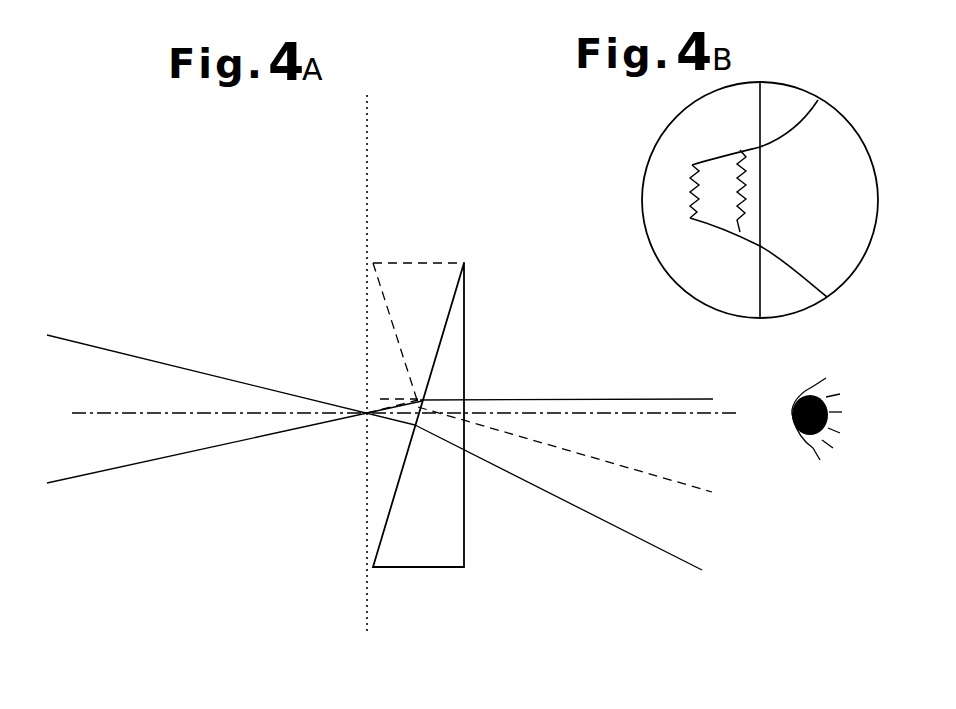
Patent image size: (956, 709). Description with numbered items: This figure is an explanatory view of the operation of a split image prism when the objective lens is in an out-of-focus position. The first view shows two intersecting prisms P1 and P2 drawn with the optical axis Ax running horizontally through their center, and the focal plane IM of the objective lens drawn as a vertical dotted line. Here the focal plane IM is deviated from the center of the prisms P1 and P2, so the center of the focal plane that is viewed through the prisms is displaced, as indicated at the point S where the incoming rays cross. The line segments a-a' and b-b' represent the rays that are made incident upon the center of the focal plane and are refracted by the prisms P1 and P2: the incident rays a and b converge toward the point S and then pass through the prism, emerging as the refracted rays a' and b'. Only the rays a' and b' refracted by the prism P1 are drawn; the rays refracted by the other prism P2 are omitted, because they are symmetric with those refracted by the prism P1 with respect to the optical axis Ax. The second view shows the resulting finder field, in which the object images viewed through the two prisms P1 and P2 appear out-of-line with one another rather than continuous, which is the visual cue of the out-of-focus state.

The focal plane IM is at (366, 154).
The prism P1 is at (465, 290).
The prism P2 is at (378, 279).
The deviated center of focal plane S is at (367, 412).
The optical axis Ax is at (117, 412).
The incident ray a is at (221, 374).
The incident ray b is at (225, 450).
The refracted ray a' is at (569, 503).
The refracted ray b' is at (577, 397).